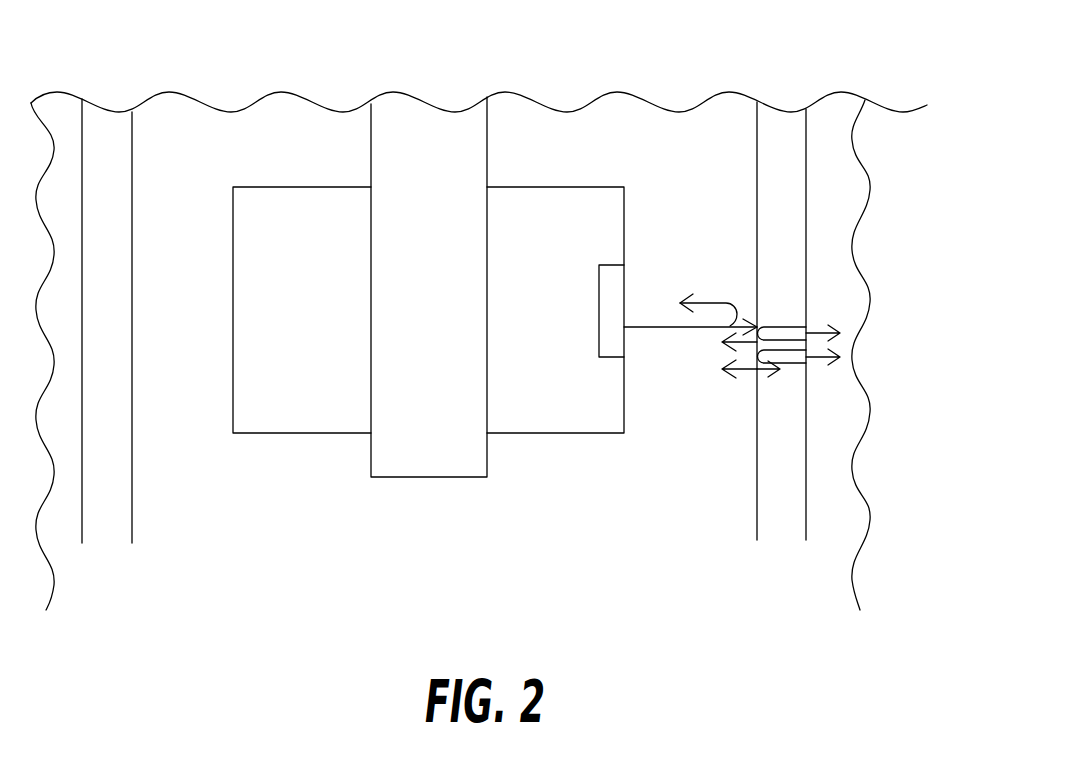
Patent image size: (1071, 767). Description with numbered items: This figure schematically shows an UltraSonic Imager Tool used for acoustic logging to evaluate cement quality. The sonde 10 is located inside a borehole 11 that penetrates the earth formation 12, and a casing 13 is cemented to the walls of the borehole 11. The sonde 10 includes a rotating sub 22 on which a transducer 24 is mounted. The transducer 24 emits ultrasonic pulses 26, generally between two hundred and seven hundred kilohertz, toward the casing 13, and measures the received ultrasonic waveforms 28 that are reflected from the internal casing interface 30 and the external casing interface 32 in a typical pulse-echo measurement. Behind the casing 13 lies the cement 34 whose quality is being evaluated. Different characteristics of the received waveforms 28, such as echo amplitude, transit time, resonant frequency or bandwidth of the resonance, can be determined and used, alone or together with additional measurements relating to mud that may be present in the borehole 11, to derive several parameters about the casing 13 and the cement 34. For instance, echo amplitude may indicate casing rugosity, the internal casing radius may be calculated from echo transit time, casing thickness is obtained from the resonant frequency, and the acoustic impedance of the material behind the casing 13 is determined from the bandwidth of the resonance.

The sonde 10 is at (536, 353).
The borehole 11 is at (557, 123).
The earth formation 12 is at (946, 277).
The casing 13 is at (793, 329).
The rotating sub 22 is at (566, 419).
The transducer 24 is at (613, 346).
The ultrasonic pulses 26 is at (698, 329).
The received ultrasonic waveforms 28 is at (713, 300).
The internal casing interface 30 is at (757, 540).
The external casing interface 32 is at (806, 540).
The cement 34 is at (828, 177).